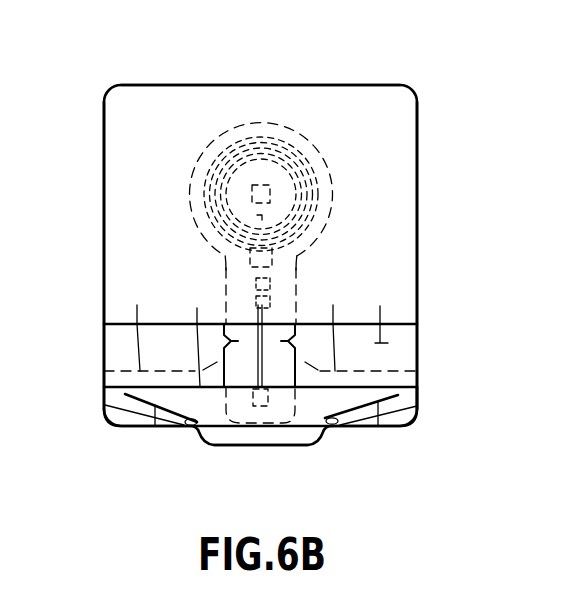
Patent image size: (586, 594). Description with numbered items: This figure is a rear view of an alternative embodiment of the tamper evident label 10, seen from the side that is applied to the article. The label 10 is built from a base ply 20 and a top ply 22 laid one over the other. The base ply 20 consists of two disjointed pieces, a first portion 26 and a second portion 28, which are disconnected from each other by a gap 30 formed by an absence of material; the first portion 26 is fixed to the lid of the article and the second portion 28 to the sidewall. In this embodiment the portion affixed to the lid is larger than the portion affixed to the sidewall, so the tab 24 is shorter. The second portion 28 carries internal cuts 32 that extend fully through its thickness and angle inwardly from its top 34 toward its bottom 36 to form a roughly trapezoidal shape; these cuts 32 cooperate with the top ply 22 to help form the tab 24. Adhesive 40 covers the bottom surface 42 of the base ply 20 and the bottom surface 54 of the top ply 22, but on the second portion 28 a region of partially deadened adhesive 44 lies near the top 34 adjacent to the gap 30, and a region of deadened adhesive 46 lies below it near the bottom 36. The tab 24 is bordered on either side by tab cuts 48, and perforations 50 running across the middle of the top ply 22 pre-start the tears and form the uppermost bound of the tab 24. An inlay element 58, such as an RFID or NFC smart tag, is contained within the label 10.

The tamper evident label 10 is at (83, 70).
The base ply 20 is at (103, 140).
The top ply 22 is at (103, 355).
The tab 24 is at (238, 448).
The first portion 26 is at (418, 137).
The second portion 28 is at (418, 393).
The gap 30 is at (403, 342).
The internal cuts 32 is at (158, 427).
The top 34 is at (200, 335).
The bottom 36 is at (395, 427).
The adhesive 40 is at (110, 200).
The bottom surface 42 is at (172, 135).
The partially deadened adhesive 44 is at (112, 393).
The deadened adhesive 46 is at (305, 446).
The tab cuts 48 is at (183, 427).
The perforations 50 is at (239, 326).
The bottom surface 54 is at (383, 312).
The inlay element 58 is at (336, 188).